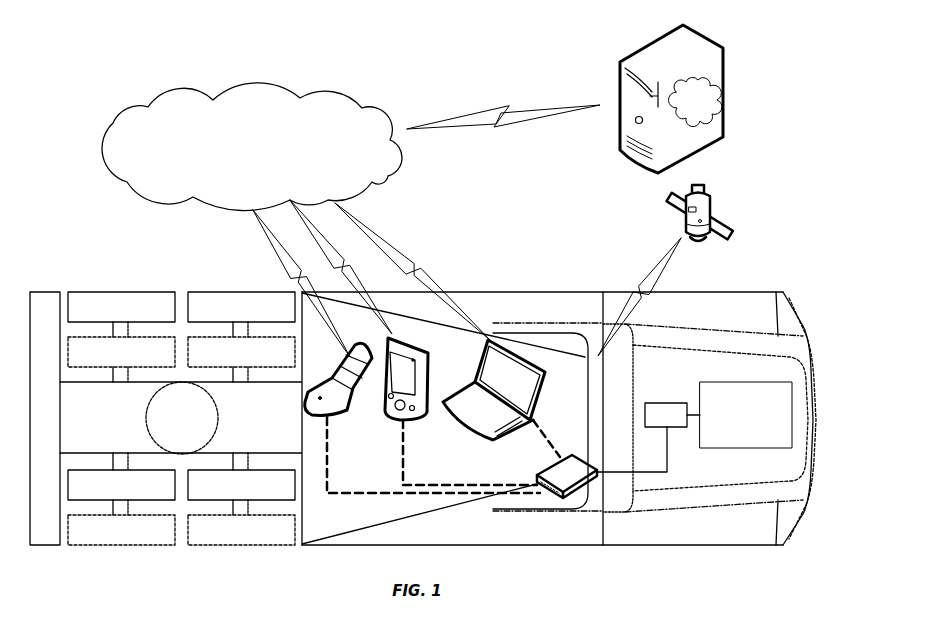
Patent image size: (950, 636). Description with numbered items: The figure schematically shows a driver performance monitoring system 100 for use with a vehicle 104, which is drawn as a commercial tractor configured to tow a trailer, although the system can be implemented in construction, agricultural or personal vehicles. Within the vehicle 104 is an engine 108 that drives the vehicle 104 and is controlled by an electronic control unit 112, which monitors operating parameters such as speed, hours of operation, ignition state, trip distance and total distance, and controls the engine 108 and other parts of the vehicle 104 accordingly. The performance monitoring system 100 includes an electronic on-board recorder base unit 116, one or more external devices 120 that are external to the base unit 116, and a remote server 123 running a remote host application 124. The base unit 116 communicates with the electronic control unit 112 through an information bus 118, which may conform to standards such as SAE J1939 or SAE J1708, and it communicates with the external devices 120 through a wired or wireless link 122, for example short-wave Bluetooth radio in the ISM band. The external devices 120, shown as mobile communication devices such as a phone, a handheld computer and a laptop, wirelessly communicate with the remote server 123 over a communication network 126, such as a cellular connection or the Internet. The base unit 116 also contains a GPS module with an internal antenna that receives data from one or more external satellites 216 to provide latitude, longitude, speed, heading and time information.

The performance monitoring system 100 is at (749, 124).
The vehicle 104 is at (742, 295).
The engine 108 is at (745, 448).
The electronic control unit 112 is at (677, 402).
The electronic on-board recorder base unit 116 is at (545, 467).
The information bus 118 is at (668, 460).
The external devices 120 is at (348, 407).
The wired or wireless link 122 is at (547, 442).
The remote server 123 is at (657, 82).
The remote host application 124 is at (708, 78).
The communication network 126 is at (385, 183).
The external satellites 216 is at (730, 196).